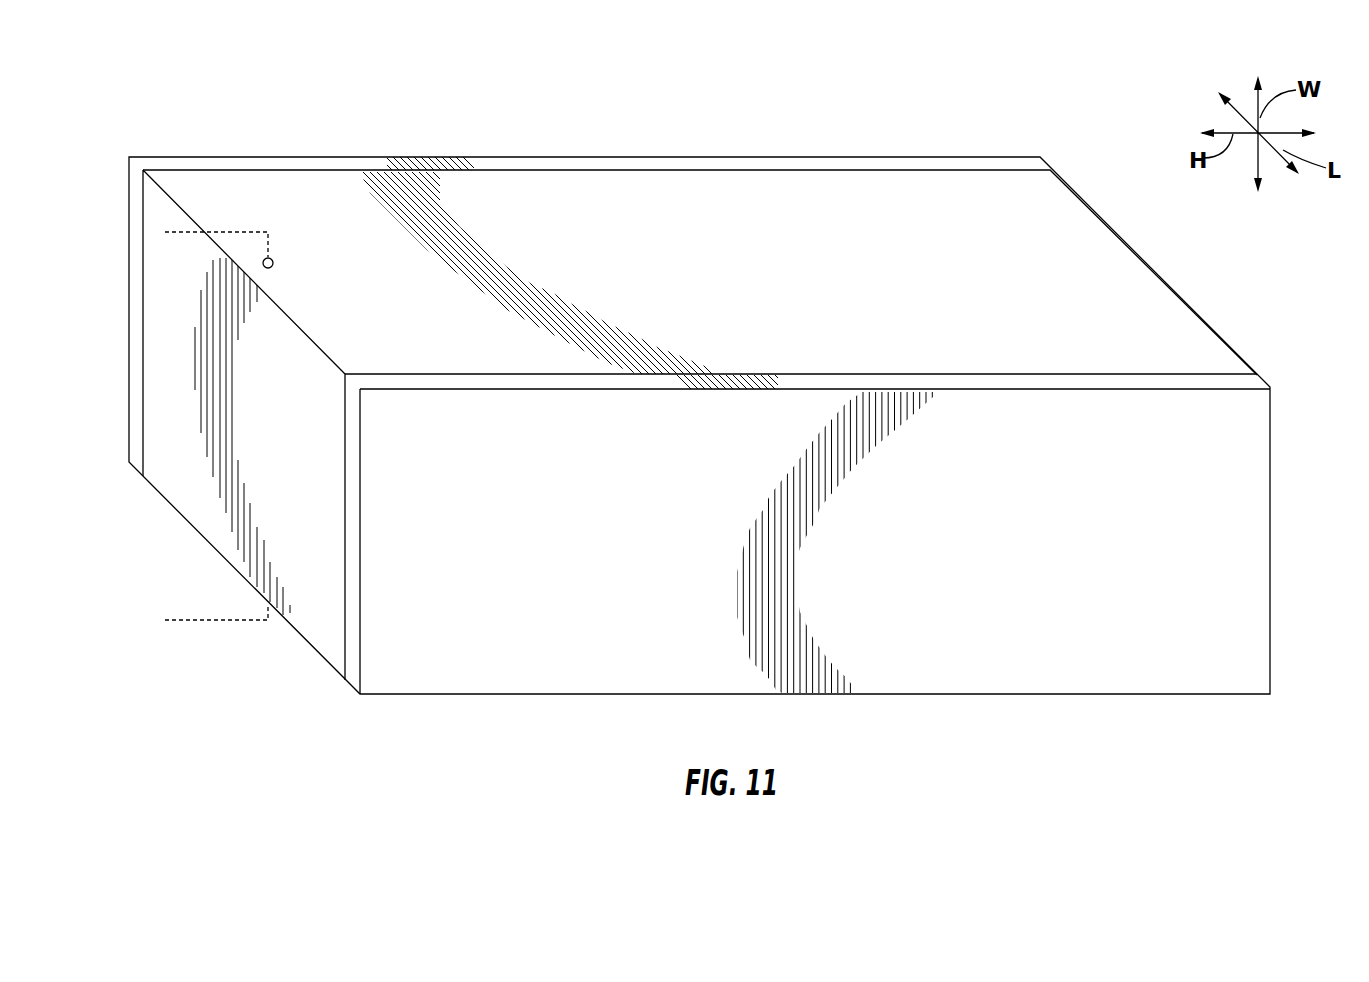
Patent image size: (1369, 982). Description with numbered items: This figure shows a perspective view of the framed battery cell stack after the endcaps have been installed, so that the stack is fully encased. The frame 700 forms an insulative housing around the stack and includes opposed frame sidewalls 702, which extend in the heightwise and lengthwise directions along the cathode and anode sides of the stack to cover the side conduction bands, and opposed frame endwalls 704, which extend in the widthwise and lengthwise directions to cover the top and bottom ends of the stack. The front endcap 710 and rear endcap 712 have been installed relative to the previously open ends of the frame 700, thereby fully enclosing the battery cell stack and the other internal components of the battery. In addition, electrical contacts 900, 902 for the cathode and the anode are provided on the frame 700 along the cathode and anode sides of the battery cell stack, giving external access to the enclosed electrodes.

The frame 700 is at (242, 186).
The frame sidewalls 702 is at (1180, 346).
The frame endwalls 704 is at (183, 369).
The front endcap 710 is at (997, 632).
The rear endcap 712 is at (666, 166).
The electrical contact 900 is at (187, 233).
The electrical contact 902 is at (187, 621).